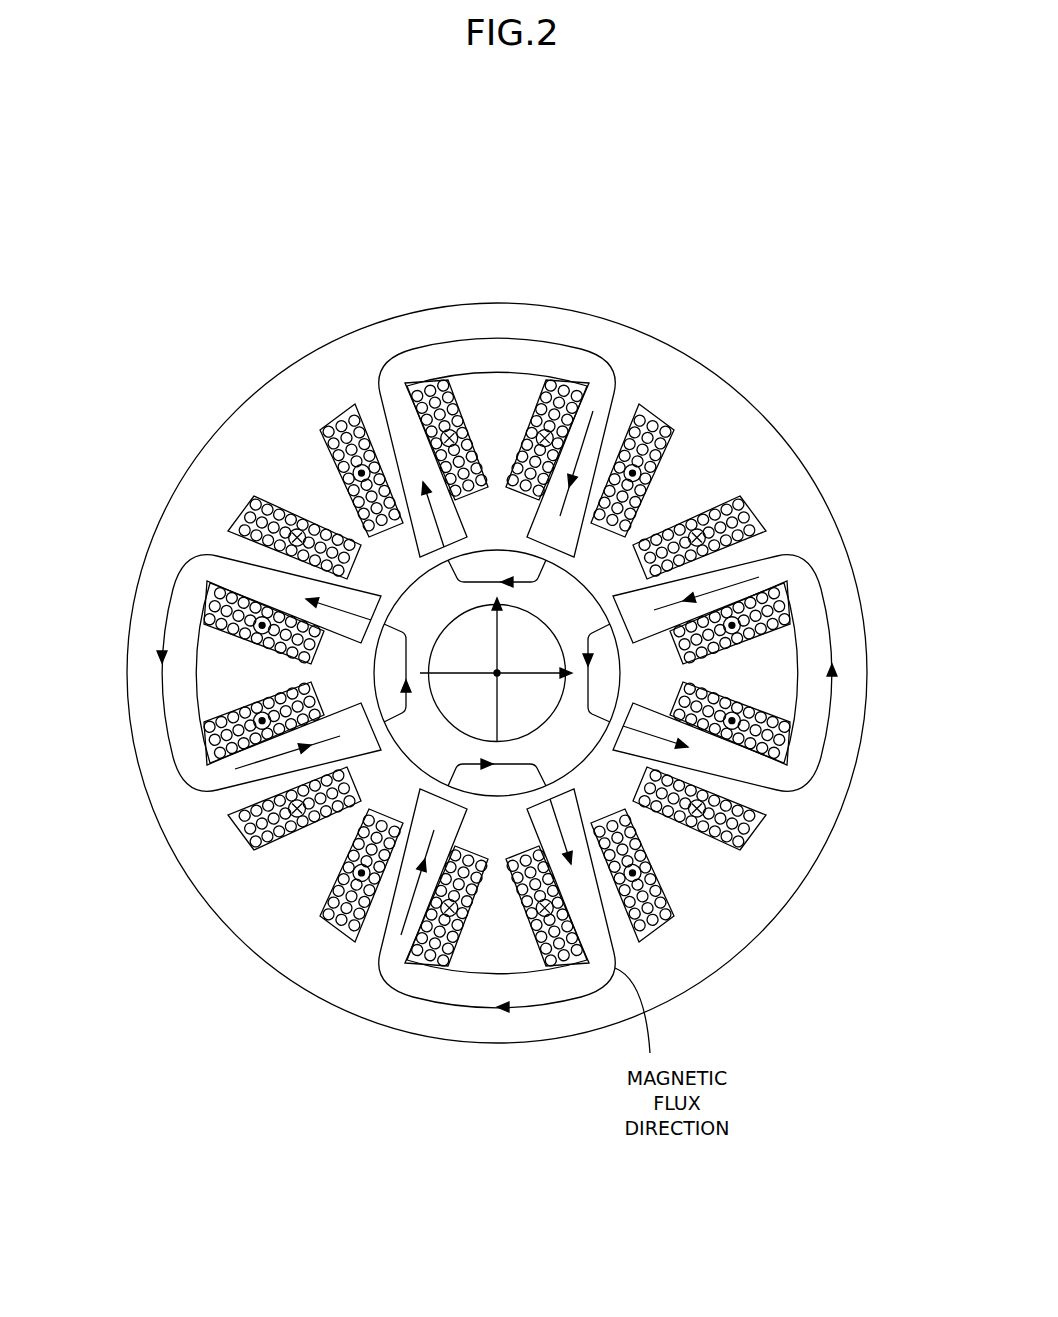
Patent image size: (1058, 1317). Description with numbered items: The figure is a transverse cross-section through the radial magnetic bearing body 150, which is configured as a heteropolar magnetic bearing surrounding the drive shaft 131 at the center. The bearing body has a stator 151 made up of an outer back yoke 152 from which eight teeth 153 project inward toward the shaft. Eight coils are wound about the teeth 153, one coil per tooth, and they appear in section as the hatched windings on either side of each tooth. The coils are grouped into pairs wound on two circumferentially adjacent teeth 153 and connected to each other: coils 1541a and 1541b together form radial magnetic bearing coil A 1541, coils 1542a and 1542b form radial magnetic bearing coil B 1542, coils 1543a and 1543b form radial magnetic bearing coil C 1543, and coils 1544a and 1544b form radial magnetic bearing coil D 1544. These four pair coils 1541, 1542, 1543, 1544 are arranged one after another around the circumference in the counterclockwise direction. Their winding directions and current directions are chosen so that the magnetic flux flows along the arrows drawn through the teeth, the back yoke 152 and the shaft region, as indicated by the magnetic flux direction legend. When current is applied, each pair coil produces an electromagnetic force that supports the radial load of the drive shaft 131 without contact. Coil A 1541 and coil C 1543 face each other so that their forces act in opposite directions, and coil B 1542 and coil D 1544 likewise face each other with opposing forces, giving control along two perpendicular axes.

The radial magnetic bearing body 150 is at (842, 153).
The stator 151 is at (134, 572).
The back yoke 152 is at (155, 519).
The drive shaft 131 is at (535, 648).
The teeth 153 is at (382, 437).
The radial magnetic bearing coil A 1541 is at (520, 348).
The coil 1541a is at (455, 392).
The coil 1541b is at (620, 420).
The radial magnetic bearing coil B 1542 is at (214, 821).
The coil 1542a is at (200, 558).
The coil 1542b is at (200, 790).
The radial magnetic bearing coil C 1543 is at (492, 1008).
The coil 1543a is at (338, 917).
The coil 1543b is at (530, 937).
The radial magnetic bearing coil D 1544 is at (786, 802).
The coil 1544a is at (753, 813).
The coil 1544b is at (793, 617).